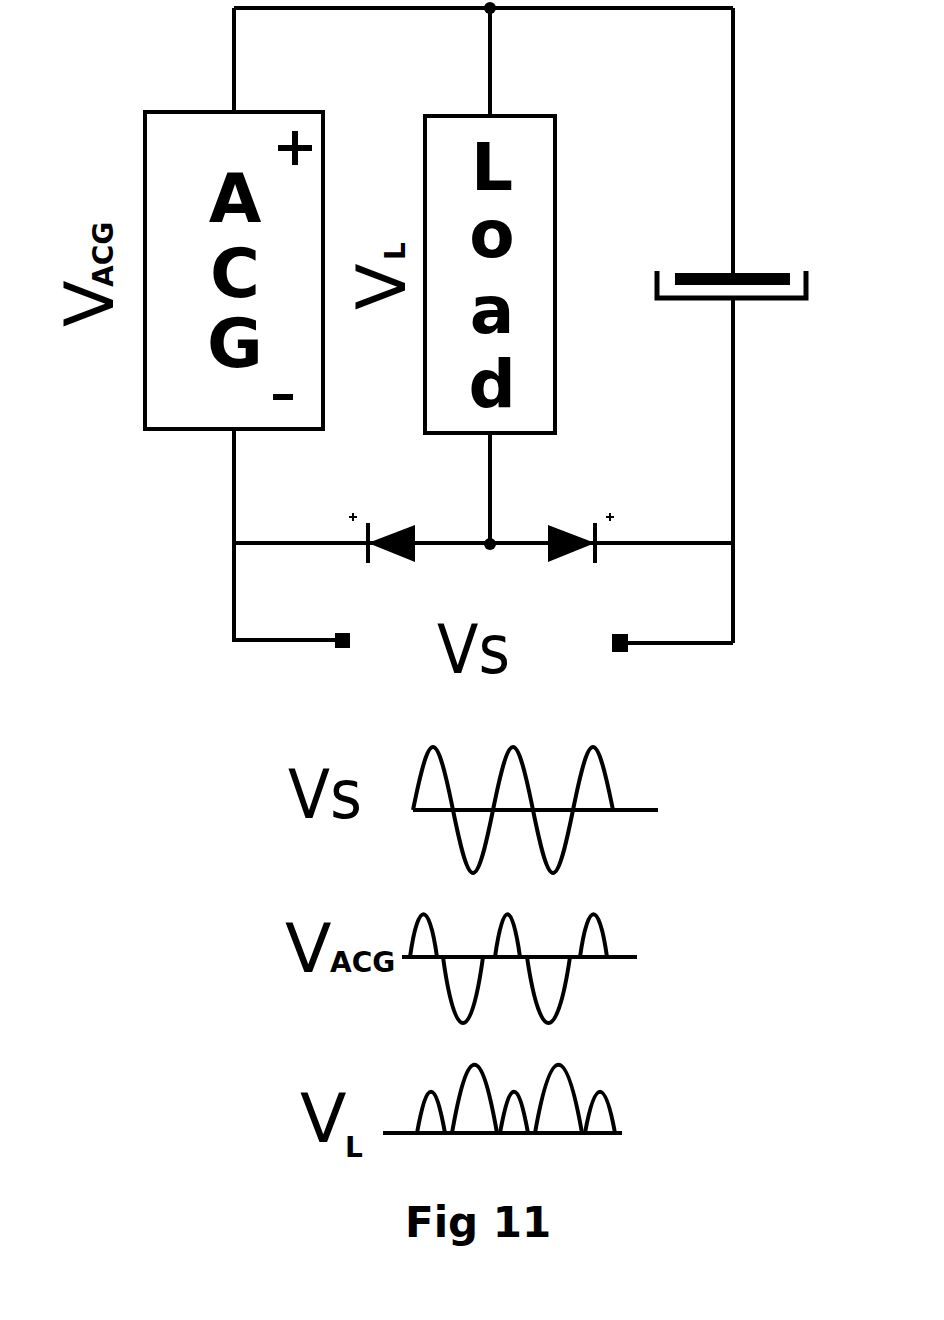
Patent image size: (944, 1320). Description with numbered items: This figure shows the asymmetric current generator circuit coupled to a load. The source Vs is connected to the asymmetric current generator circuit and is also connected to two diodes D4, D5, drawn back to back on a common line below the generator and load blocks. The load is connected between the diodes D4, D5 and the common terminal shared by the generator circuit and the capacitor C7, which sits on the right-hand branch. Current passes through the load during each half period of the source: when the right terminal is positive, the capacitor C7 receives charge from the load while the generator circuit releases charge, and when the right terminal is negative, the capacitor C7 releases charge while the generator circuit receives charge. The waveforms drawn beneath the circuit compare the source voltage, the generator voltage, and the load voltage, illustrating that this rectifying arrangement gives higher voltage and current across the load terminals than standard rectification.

The diode D4 is at (398, 517).
The diode D5 is at (572, 517).
The capacitor C7 is at (731, 321).